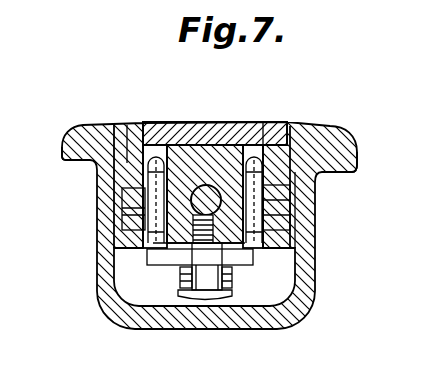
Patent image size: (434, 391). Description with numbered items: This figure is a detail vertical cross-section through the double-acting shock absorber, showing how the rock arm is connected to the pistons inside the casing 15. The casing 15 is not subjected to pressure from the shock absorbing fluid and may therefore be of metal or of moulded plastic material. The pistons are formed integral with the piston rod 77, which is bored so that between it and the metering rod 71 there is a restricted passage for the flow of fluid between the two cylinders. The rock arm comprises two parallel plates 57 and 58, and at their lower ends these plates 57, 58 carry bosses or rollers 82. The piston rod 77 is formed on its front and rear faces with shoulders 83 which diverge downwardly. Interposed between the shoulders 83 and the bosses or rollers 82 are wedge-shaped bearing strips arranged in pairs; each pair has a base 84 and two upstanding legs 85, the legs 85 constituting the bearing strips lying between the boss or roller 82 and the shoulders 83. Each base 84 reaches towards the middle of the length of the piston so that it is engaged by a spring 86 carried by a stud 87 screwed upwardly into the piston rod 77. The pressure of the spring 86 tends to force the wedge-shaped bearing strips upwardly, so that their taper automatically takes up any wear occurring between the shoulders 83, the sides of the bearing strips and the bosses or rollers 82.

The casing 15 is at (248, 317).
The plate 57 is at (110, 164).
The plate 58 is at (273, 172).
The metering rod 71 is at (206, 176).
The piston rod 77 is at (240, 162).
The boss or roller 82 is at (157, 208).
The shoulder 83 is at (160, 157).
The base 84 is at (178, 267).
The leg 85 is at (147, 158).
The spring 86 is at (183, 281).
The stud 87 is at (205, 294).